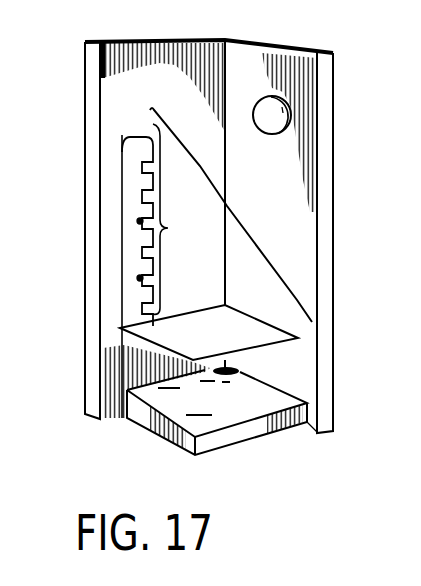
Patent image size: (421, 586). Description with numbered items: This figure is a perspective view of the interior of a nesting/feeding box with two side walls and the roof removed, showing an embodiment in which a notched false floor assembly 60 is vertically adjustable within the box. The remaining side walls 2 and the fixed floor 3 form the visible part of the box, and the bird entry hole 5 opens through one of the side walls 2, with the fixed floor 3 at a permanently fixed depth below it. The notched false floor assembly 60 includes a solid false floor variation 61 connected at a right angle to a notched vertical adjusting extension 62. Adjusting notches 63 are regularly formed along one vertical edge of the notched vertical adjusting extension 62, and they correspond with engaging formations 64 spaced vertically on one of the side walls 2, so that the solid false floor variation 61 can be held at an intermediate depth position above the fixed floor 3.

The side walls 2 is at (185, 54).
The fixed floor 3 is at (262, 432).
The bird entry hole 5 is at (322, 72).
The notched false floor assembly 60 is at (231, 213).
The solid false floor variation 61 is at (285, 334).
The notched vertical adjusting extension 62 is at (133, 148).
The adjusting notches 63 is at (179, 219).
The engaging formations 64 is at (140, 221).